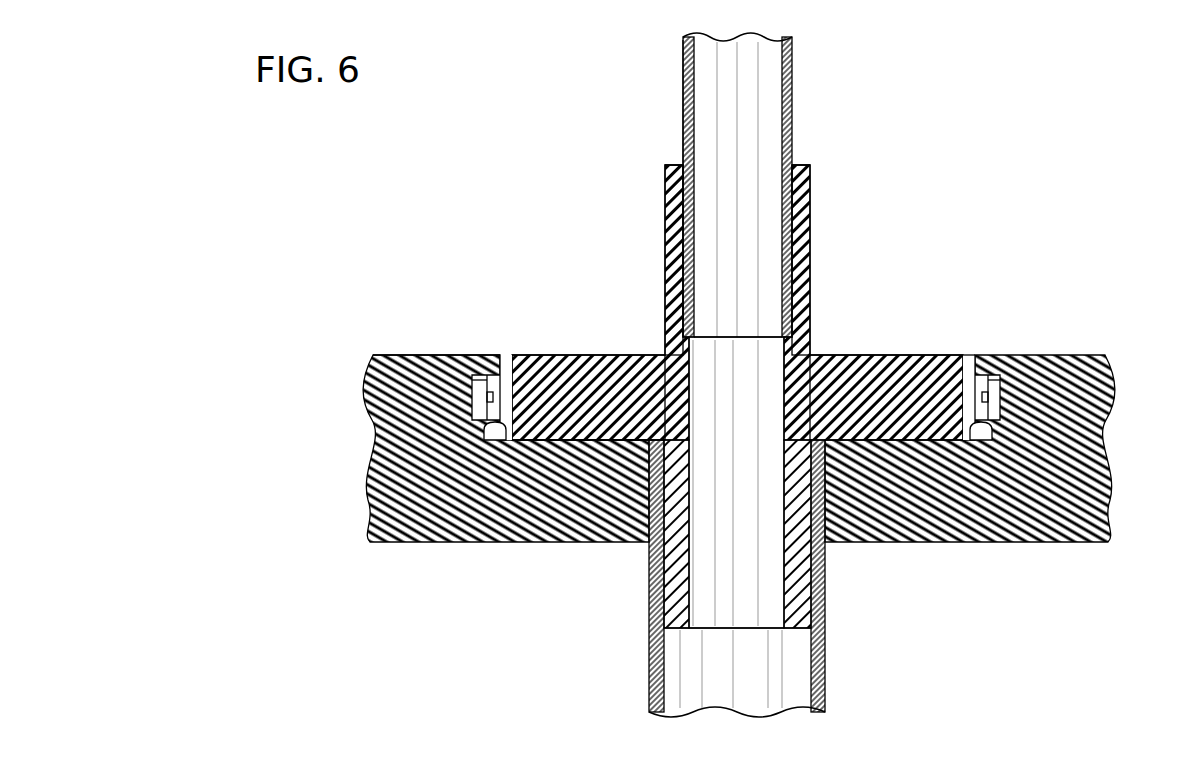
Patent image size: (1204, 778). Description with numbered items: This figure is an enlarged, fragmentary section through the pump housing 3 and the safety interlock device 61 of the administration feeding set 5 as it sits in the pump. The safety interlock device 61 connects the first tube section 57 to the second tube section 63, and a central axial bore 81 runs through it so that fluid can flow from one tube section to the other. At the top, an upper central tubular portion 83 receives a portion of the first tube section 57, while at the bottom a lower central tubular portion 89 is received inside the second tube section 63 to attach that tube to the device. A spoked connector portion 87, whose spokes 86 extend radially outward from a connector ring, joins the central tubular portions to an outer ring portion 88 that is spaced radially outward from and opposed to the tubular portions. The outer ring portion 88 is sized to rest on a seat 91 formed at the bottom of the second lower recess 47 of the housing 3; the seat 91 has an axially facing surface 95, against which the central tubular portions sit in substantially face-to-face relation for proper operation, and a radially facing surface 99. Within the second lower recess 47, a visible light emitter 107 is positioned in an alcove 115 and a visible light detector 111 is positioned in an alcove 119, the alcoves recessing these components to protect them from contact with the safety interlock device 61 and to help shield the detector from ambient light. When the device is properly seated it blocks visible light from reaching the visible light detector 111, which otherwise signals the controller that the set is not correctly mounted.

The housing 3 is at (1094, 348).
The administration feeding set 5 is at (670, 81).
The first tube section 57 is at (794, 62).
The upper central tubular portion 83 is at (800, 168).
The safety interlock device 61 is at (822, 269).
The central axial bore 81 is at (747, 365).
The spoked connector portion 87 is at (820, 348).
The outer ring portion 88 is at (966, 352).
The seat 91 is at (962, 344).
The second lower recess 47 is at (977, 352).
The visible light emitter 107 is at (990, 392).
The alcove 115 is at (1000, 405).
The visible light detector 111 is at (420, 355).
The radially facing surface 99 is at (499, 370).
The alcove 119 is at (512, 357).
The axially facing surface 95 is at (490, 425).
The spokes 86 is at (588, 418).
The lower central tubular portion 89 is at (668, 588).
The second tube section 63 is at (818, 582).